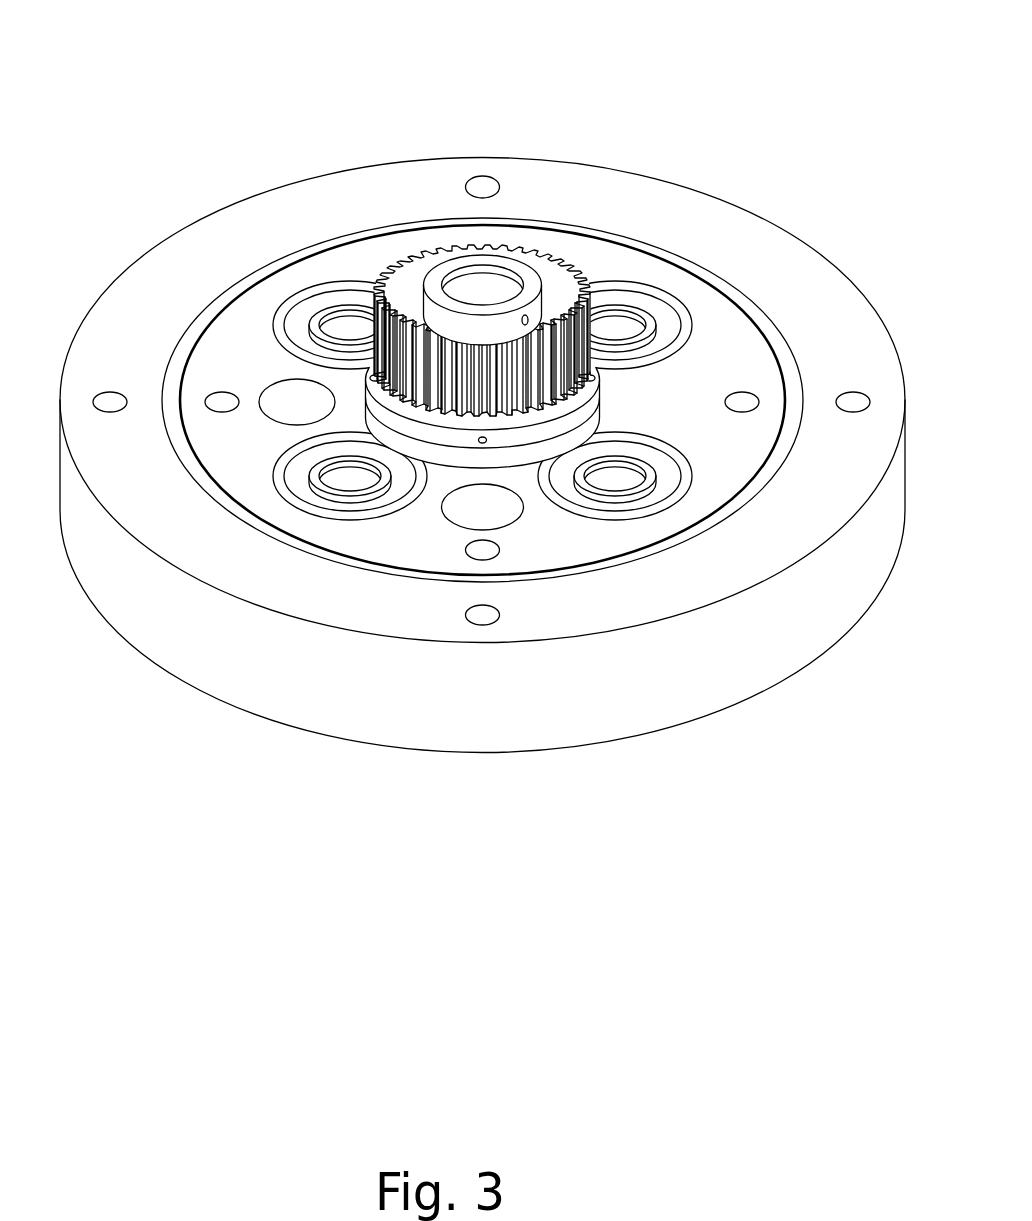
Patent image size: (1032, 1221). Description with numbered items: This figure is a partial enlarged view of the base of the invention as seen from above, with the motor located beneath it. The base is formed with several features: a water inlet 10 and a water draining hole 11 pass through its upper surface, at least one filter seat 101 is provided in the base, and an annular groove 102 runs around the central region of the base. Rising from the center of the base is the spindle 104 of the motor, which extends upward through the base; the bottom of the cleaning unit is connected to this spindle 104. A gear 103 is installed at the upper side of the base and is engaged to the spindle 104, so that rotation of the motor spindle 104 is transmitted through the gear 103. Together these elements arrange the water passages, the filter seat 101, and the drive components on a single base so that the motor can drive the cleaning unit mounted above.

The water inlet 10 is at (480, 508).
The water draining hole 11 is at (297, 403).
The filter seat 101 is at (663, 483).
The annular groove 102 is at (617, 238).
The gear 103 is at (530, 253).
The spindle 104 is at (482, 292).